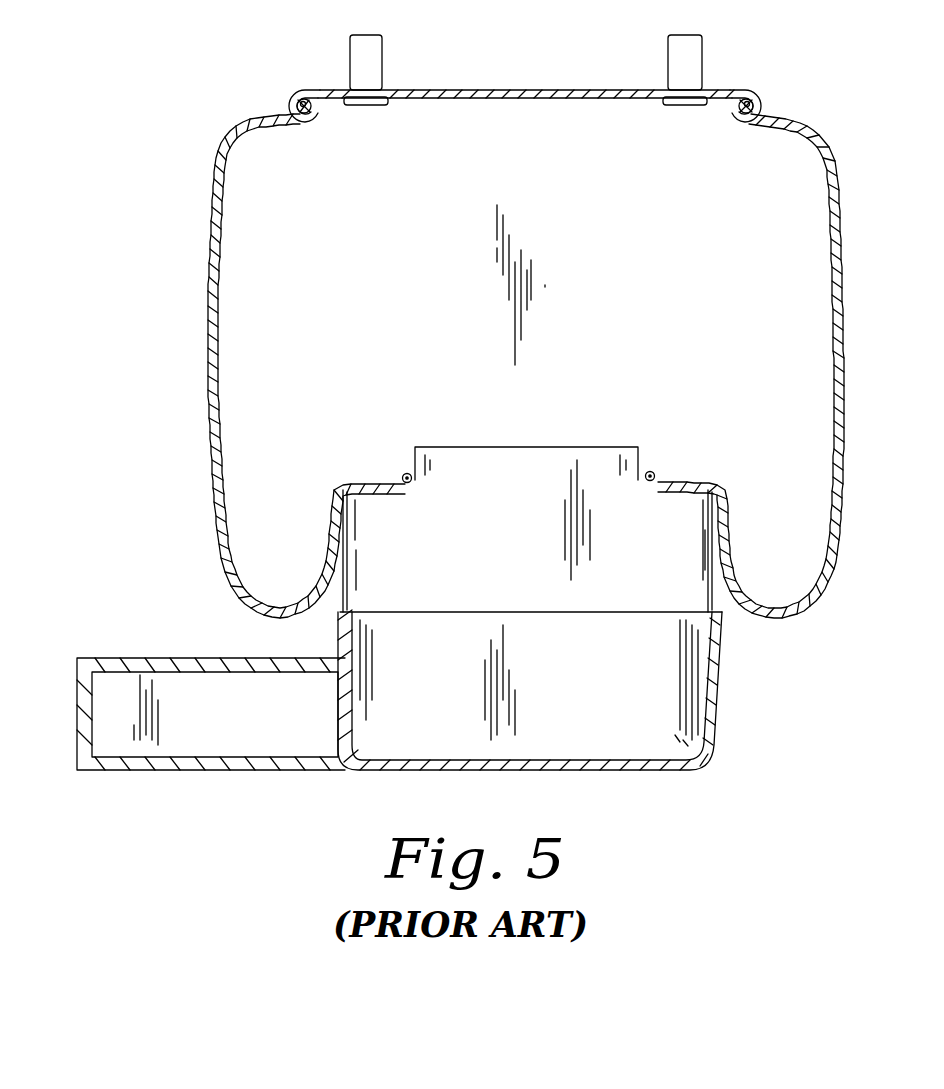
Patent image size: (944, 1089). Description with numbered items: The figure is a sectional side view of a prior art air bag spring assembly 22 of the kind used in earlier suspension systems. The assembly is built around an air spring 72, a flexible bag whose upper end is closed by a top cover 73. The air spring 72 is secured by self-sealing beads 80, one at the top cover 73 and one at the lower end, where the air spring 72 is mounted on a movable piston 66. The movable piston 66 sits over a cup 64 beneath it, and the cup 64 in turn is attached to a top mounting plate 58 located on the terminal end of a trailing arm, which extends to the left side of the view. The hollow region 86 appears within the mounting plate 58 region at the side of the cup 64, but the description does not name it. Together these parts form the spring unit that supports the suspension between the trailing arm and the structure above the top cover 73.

The air bag spring assembly 22 is at (487, 76).
The top cover 73 is at (565, 90).
The self-sealing beads 80 is at (330, 120).
The air spring 72 is at (720, 340).
The movable piston 66 is at (458, 565).
The cup 64 is at (602, 707).
The top mounting plate 58 is at (170, 657).
The bracket cavity 86 is at (230, 724).